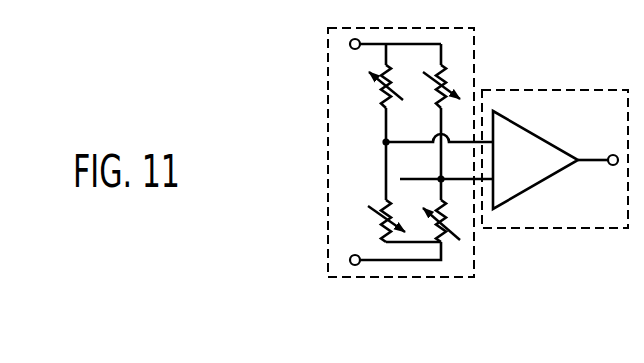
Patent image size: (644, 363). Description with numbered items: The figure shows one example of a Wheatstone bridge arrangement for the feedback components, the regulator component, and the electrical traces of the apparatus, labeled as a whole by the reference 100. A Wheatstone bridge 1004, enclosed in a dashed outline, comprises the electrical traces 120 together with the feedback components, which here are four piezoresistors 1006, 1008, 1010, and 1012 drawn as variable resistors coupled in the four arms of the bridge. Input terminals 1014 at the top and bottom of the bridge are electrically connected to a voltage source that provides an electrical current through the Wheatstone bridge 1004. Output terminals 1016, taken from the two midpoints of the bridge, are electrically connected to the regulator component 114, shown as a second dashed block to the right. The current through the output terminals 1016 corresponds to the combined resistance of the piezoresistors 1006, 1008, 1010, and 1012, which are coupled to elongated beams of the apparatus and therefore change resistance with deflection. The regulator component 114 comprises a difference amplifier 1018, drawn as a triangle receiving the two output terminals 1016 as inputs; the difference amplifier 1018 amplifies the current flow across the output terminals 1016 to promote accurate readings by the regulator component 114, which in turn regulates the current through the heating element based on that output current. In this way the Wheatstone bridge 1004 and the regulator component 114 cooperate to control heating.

The sensor system 100 is at (238, 207).
The regulator component 114 is at (555, 228).
The electrical traces 120 is at (403, 262).
The Wheatstone bridge 1004 is at (378, 278).
The piezoresistor 1006 is at (378, 97).
The piezoresistor 1008 is at (450, 76).
The piezoresistor 1010 is at (380, 218).
The piezoresistor 1012 is at (455, 236).
The input terminals 1014 is at (350, 46).
The output terminals 1016 is at (400, 179).
The difference amplifier 1018 is at (530, 130).